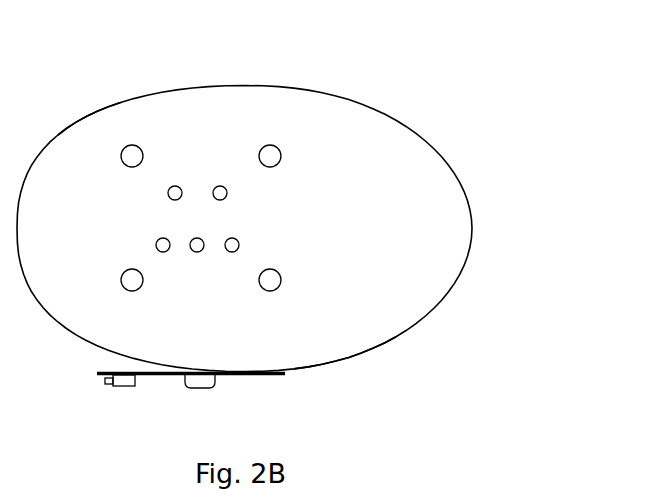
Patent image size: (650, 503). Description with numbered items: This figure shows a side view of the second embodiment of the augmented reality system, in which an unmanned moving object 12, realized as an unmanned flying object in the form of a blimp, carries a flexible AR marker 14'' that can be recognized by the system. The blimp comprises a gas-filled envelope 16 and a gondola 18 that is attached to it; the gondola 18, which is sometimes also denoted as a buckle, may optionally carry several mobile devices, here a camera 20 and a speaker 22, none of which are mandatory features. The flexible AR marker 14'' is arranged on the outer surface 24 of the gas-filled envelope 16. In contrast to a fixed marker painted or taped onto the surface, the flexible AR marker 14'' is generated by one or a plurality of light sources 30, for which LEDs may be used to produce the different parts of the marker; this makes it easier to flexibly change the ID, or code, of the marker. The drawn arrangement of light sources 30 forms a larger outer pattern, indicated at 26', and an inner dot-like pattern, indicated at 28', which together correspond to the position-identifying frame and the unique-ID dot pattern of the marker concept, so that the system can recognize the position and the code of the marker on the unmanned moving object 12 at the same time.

The unmanned moving object 12 is at (266, 84).
The flexible AR marker 14'' is at (357, 96).
The gas-filled envelope 16 is at (432, 305).
The gondola 18 is at (250, 375).
The camera 20 is at (125, 384).
The speaker 22 is at (198, 386).
The outer surface 24 is at (93, 138).
The large opening 26' is at (114, 176).
The small opening 28' is at (184, 173).
The light sources 30 is at (183, 218).